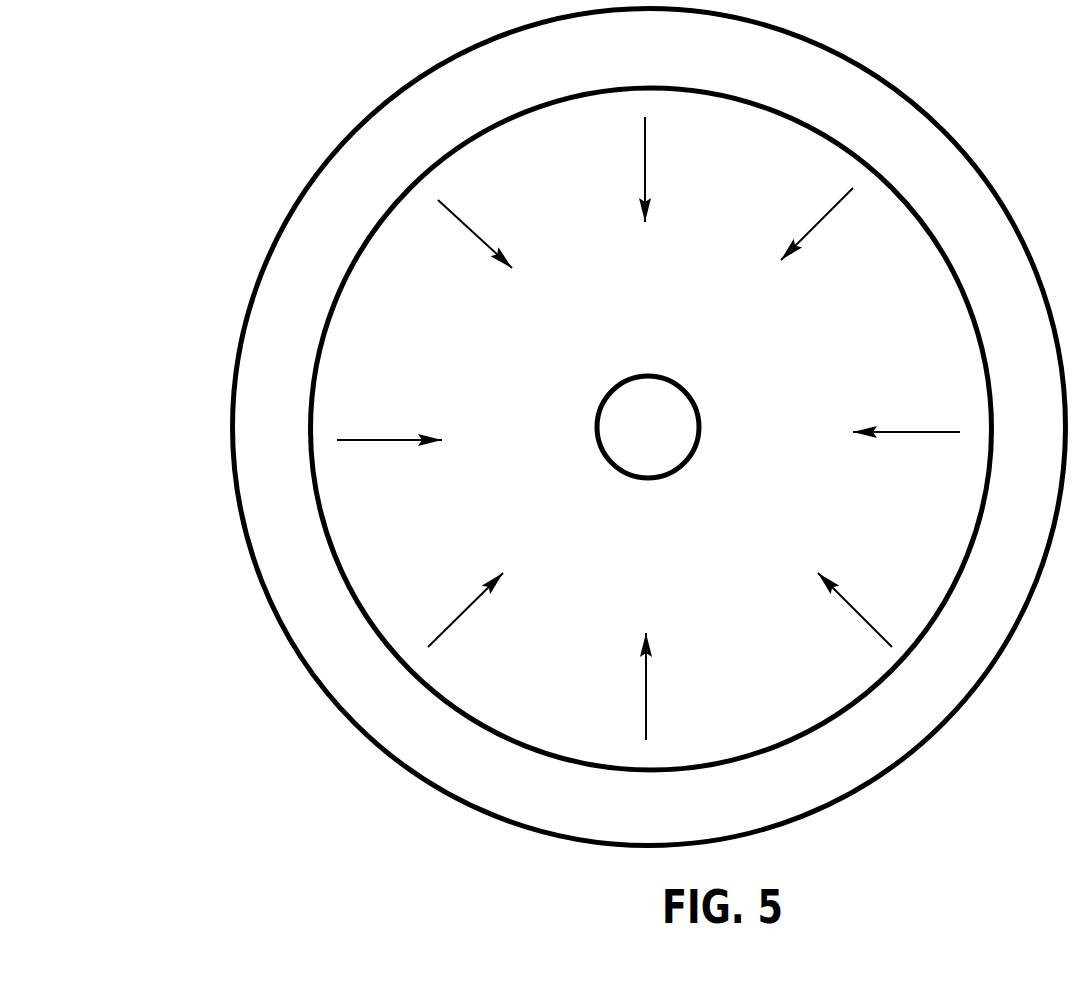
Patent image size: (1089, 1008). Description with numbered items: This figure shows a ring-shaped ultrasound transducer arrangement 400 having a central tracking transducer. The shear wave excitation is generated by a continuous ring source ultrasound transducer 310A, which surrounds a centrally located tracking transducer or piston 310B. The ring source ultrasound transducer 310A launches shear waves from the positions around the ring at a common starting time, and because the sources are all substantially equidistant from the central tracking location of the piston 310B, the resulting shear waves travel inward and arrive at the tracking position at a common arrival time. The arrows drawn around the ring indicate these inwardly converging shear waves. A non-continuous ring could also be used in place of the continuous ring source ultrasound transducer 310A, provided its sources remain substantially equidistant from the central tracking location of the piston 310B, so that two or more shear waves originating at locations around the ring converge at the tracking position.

The sensing system / target tracking scenario 400 is at (209, 157).
The continuous ring source ultrasound transducer 310A is at (318, 605).
The tracking transducer or piston 310B is at (625, 418).